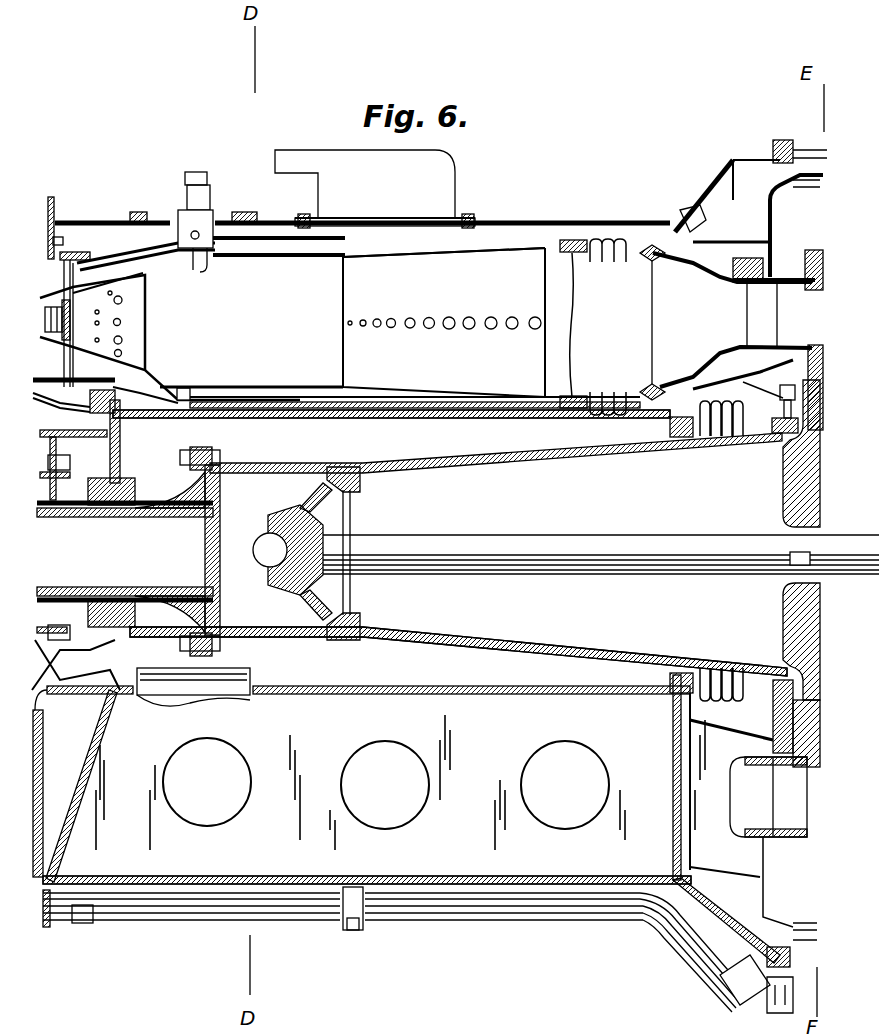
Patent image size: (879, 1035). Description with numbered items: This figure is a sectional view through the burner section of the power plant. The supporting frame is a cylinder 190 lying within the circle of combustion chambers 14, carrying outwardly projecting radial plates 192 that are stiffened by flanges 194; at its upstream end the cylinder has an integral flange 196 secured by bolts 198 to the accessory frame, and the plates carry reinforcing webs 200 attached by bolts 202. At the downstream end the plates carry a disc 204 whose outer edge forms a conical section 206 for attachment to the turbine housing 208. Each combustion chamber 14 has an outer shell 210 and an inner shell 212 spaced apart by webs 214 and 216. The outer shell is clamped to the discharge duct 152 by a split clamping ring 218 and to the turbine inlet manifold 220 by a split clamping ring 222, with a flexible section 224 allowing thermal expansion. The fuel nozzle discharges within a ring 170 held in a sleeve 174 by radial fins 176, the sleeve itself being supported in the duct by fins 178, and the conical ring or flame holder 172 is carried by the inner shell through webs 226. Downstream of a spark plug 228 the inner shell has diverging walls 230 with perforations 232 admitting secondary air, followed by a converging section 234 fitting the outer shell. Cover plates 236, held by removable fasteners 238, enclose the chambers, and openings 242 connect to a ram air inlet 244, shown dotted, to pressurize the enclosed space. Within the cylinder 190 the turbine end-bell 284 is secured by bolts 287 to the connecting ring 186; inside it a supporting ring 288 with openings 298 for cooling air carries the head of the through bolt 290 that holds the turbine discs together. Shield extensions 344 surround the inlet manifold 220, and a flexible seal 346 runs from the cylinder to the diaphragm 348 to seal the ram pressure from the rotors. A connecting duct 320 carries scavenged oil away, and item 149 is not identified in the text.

The combustion chamber 14 is at (432, 391).
The inner casing wall 149 is at (437, 418).
The discharge duct 152 is at (57, 378).
The ring 170 is at (72, 318).
The conical ring (flame holder) 172 is at (133, 360).
The sleeve 174 is at (62, 300).
The radial fins 176 is at (80, 287).
The fins 178 is at (100, 253).
The connecting ring 186 is at (213, 497).
The cylinder 190 is at (352, 420).
The radial plates 192 is at (483, 732).
The flanges 194 is at (270, 877).
The integral flange 196 is at (117, 423).
The bolts 198 is at (180, 388).
The reinforcing webs 200 is at (52, 232).
The bolts 202 is at (58, 240).
The disc 204 is at (672, 828).
The conical section 206 is at (717, 917).
The turbine housing 208 is at (817, 950).
The outer shell 210 is at (293, 403).
The inner shell 212 is at (282, 397).
The webs 214 is at (220, 387).
The webs 216 is at (578, 321).
The split clamping ring 218 is at (70, 255).
The turbine inlet manifold 220 is at (707, 273).
The split clamping ring 222 is at (653, 248).
The flexible section 224 is at (598, 240).
The webs 226 is at (123, 297).
The spark plug 228 is at (197, 227).
The diverging walls 230 is at (433, 258).
The perforations 232 is at (470, 322).
The converging section 234 is at (615, 263).
The cover plates 236 is at (498, 222).
The removable fasteners 238 is at (705, 218).
The openings 242 is at (357, 220).
The ram air inlet 244 is at (443, 175).
The end-bell 284 is at (600, 453).
The bolts 287 is at (217, 460).
The supporting ring 288 is at (307, 517).
The through bolt 290 is at (462, 543).
The openings 298 is at (320, 608).
The connecting duct 320 is at (143, 905).
The shield extensions 344 is at (773, 218).
The flexible seal 346 is at (727, 423).
The diaphragm 348 is at (747, 370).